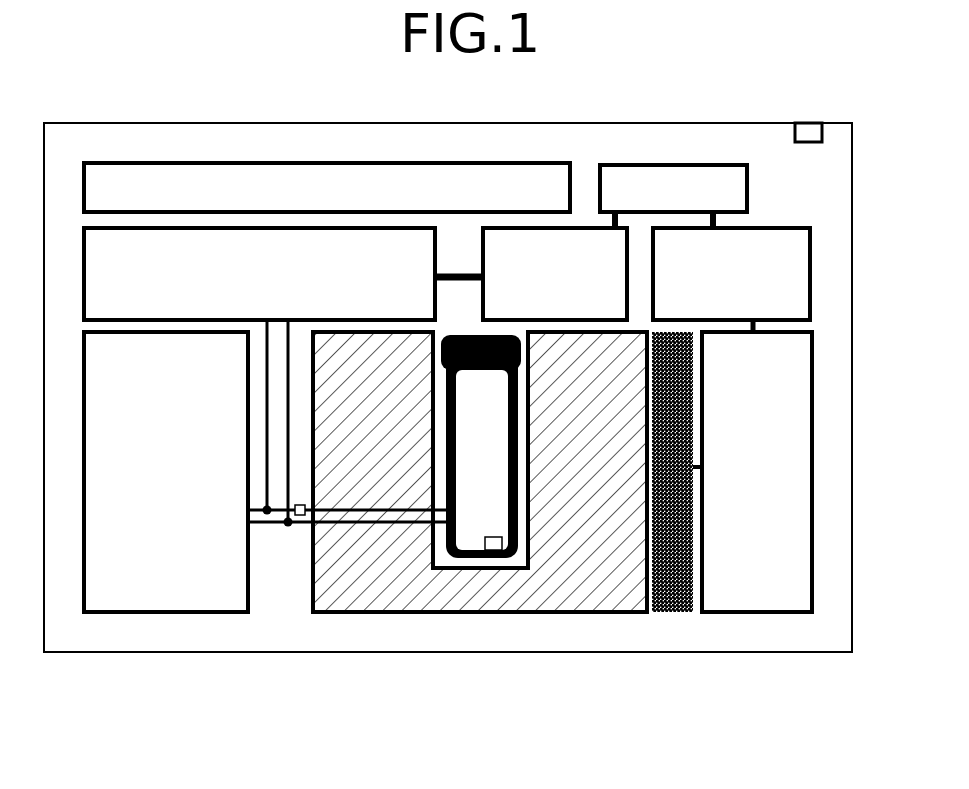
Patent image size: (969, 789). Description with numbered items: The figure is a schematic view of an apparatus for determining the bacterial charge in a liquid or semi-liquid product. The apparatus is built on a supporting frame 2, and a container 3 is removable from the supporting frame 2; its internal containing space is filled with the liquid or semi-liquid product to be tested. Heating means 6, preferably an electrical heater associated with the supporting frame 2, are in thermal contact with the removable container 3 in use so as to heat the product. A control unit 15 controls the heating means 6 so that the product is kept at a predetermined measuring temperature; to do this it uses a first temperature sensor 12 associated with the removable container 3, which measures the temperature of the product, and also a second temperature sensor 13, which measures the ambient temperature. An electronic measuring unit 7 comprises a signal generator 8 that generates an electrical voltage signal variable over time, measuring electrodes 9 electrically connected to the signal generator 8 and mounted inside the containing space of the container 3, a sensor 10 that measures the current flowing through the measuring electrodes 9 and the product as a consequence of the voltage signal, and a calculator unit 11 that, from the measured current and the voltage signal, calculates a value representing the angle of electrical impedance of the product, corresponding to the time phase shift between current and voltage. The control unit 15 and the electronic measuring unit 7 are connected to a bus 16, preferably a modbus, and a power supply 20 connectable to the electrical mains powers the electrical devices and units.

The supporting frame 2 is at (175, 653).
The container 3 is at (445, 421).
The heating means 6 is at (672, 614).
The electronic measuring unit 7 is at (283, 475).
The signal generator 8 is at (165, 467).
The measuring electrodes 9 is at (439, 526).
The sensor 10 is at (302, 504).
The calculator unit 11 is at (268, 278).
The first temperature sensor 12 is at (515, 548).
The second temperature sensor 13 is at (793, 133).
The control unit 15 is at (813, 545).
The bus 16 is at (585, 225).
The power supply 20 is at (334, 195).